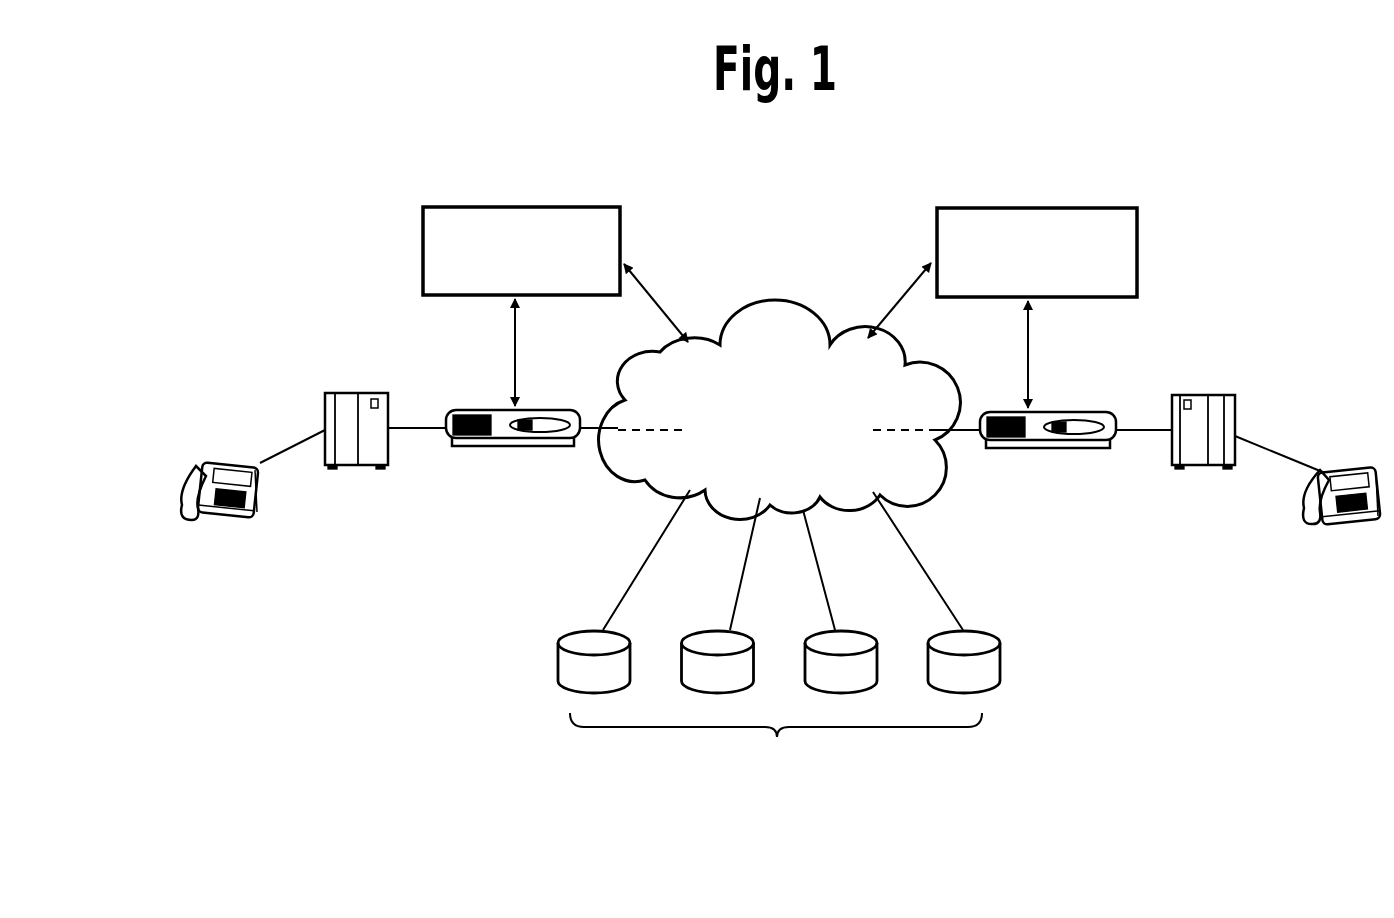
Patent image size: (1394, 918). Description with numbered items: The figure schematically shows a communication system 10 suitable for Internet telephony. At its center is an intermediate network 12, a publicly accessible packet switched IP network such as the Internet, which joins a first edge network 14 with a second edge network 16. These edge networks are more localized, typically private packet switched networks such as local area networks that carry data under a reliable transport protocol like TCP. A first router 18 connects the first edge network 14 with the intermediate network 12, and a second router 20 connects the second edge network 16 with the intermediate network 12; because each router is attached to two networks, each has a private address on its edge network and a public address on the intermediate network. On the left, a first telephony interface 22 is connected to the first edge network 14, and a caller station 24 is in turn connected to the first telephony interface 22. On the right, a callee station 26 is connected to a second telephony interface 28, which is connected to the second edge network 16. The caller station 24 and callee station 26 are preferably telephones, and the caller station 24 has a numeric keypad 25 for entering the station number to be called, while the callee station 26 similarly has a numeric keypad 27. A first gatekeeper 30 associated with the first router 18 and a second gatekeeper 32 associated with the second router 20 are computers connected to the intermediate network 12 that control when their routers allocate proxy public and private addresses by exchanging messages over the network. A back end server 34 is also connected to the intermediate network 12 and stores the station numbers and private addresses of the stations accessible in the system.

The communication system 10 is at (433, 87).
The intermediate network 12 is at (777, 325).
The first edge network 14 is at (427, 431).
The second edge network 16 is at (1145, 432).
The first router 18 is at (517, 447).
The second router 20 is at (1067, 450).
The first telephony interface 22 is at (344, 393).
The caller station 24 is at (230, 522).
The numeric keypad 25 is at (258, 503).
The callee station 26 is at (1340, 522).
The numeric keypad 27 is at (1378, 508).
The second telephony interface 28 is at (1217, 395).
The first gatekeeper 30 is at (490, 207).
The second gatekeeper 32 is at (988, 208).
The back end server 34 is at (660, 727).